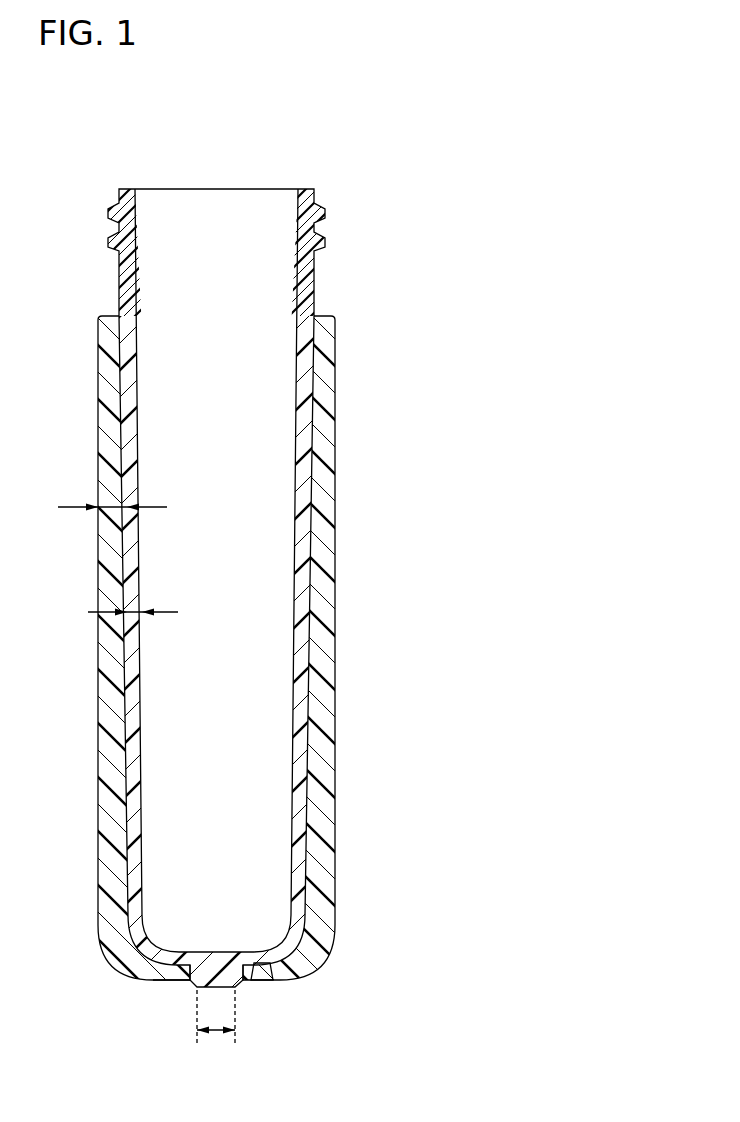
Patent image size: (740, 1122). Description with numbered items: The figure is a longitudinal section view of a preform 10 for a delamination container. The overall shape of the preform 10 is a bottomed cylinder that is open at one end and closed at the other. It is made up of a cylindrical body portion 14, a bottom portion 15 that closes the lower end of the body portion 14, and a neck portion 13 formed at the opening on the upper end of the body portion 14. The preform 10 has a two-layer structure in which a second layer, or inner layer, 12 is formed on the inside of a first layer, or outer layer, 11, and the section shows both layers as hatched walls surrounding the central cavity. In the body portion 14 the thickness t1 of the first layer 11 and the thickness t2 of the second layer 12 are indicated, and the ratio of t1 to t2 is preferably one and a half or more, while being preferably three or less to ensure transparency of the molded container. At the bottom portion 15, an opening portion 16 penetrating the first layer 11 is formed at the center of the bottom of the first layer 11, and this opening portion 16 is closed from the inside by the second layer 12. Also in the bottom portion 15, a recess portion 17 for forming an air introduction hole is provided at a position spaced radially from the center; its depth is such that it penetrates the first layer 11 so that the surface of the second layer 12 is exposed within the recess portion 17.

The preform 10 is at (388, 177).
The first layer (outer layer) 11 is at (345, 503).
The second layer (inner layer) 12 is at (285, 543).
The neck portion 13 is at (314, 280).
The body portion 14 is at (334, 675).
The bottom portion 15 is at (165, 980).
The opening portion 16 is at (216, 1030).
The recess portion 17 is at (266, 977).
The thickness of the first layer t1 is at (114, 507).
The thickness of the second layer t2 is at (135, 614).